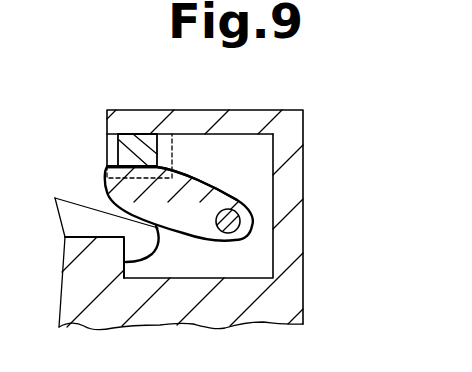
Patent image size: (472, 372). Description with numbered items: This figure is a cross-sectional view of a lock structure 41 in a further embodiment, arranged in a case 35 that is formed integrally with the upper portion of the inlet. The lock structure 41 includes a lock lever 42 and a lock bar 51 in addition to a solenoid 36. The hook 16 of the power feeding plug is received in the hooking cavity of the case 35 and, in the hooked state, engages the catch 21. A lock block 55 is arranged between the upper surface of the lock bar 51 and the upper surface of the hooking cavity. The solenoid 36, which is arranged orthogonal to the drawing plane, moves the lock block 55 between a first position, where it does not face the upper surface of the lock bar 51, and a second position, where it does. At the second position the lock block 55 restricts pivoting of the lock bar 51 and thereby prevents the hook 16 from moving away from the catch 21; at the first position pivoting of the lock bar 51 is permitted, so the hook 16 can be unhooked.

The hook 16 is at (76, 204).
The catch 21 is at (112, 248).
The case 35 is at (199, 115).
The solenoid 36 is at (181, 169).
The lock structure 41 is at (335, 125).
The lock lever 42 is at (241, 213).
The lock bar 51 is at (231, 188).
The lock block 55 is at (158, 149).